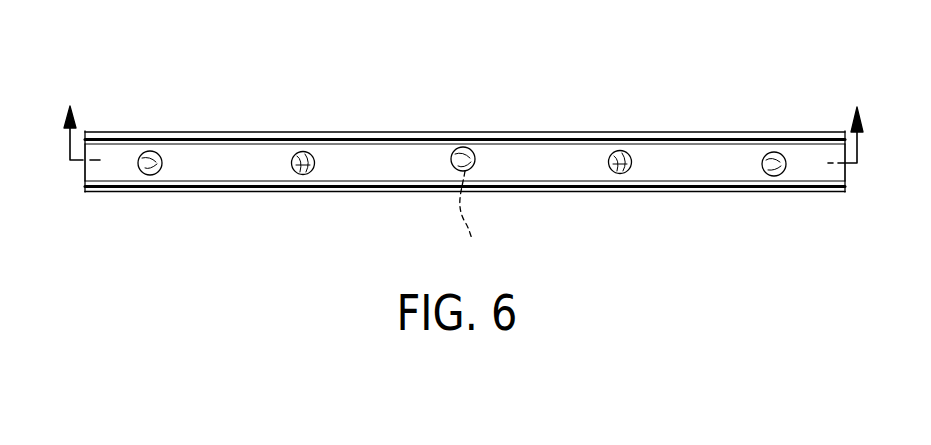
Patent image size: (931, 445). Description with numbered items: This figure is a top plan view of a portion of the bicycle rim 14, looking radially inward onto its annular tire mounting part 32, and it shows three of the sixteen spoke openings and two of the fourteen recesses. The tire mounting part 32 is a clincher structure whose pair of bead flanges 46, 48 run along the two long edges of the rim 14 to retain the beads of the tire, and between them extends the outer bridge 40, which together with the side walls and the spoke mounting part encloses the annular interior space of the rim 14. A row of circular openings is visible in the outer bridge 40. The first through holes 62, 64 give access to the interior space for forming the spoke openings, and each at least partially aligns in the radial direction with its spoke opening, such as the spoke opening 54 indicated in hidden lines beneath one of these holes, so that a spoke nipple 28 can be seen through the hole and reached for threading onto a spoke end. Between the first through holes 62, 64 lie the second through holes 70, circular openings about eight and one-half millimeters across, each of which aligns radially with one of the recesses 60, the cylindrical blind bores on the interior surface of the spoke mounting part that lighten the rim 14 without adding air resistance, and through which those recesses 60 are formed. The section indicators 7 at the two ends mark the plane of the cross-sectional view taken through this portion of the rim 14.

The section line indicator for FIG. 7 is at (463, 118).
The rim 14 is at (465, 149).
The spoke nipple 28 is at (463, 164).
The annular tire mounting part 32 is at (465, 106).
The outer bridge 40 is at (667, 162).
The bead flange 46 is at (815, 68).
The bead flange 48 is at (780, 137).
The spoke opening 54 is at (478, 212).
The recess 60 is at (448, 166).
The first through hole 62 is at (147, 151).
The first through hole 64 is at (453, 148).
The second through hole 70 is at (298, 153).